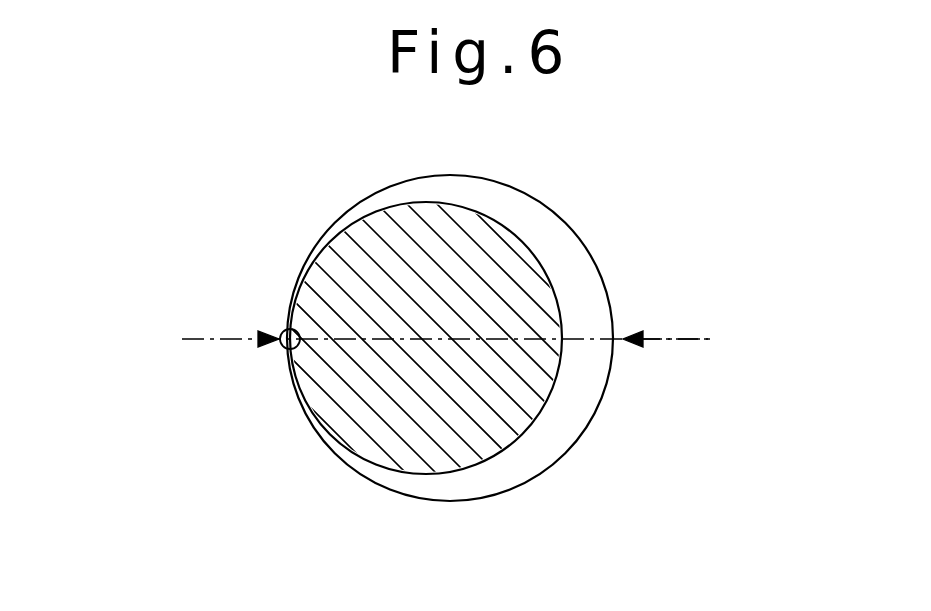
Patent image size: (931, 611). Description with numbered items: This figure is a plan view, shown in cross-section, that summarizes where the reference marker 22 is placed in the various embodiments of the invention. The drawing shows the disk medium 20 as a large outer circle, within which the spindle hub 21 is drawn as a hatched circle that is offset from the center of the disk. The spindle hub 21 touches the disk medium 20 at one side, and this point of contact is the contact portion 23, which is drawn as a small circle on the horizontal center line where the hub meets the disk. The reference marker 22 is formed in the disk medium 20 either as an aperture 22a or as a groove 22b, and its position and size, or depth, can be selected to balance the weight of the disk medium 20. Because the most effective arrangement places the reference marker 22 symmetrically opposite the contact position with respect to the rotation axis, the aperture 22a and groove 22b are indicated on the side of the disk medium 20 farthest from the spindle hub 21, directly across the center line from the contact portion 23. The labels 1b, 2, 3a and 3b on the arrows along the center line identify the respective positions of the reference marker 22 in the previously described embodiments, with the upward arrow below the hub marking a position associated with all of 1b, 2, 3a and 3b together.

The disk medium 20 is at (597, 178).
The spindle hub 21 is at (352, 250).
The reference marker 22 is at (265, 330).
The aperture 22a is at (694, 294).
The groove 22b is at (632, 330).
The contact portion 23 is at (291, 349).
The optical axis position 1b is at (428, 458).
The optical axis position 2 is at (197, 343).
The optical axis position 3a is at (691, 380).
The optical axis position 3b is at (697, 343).